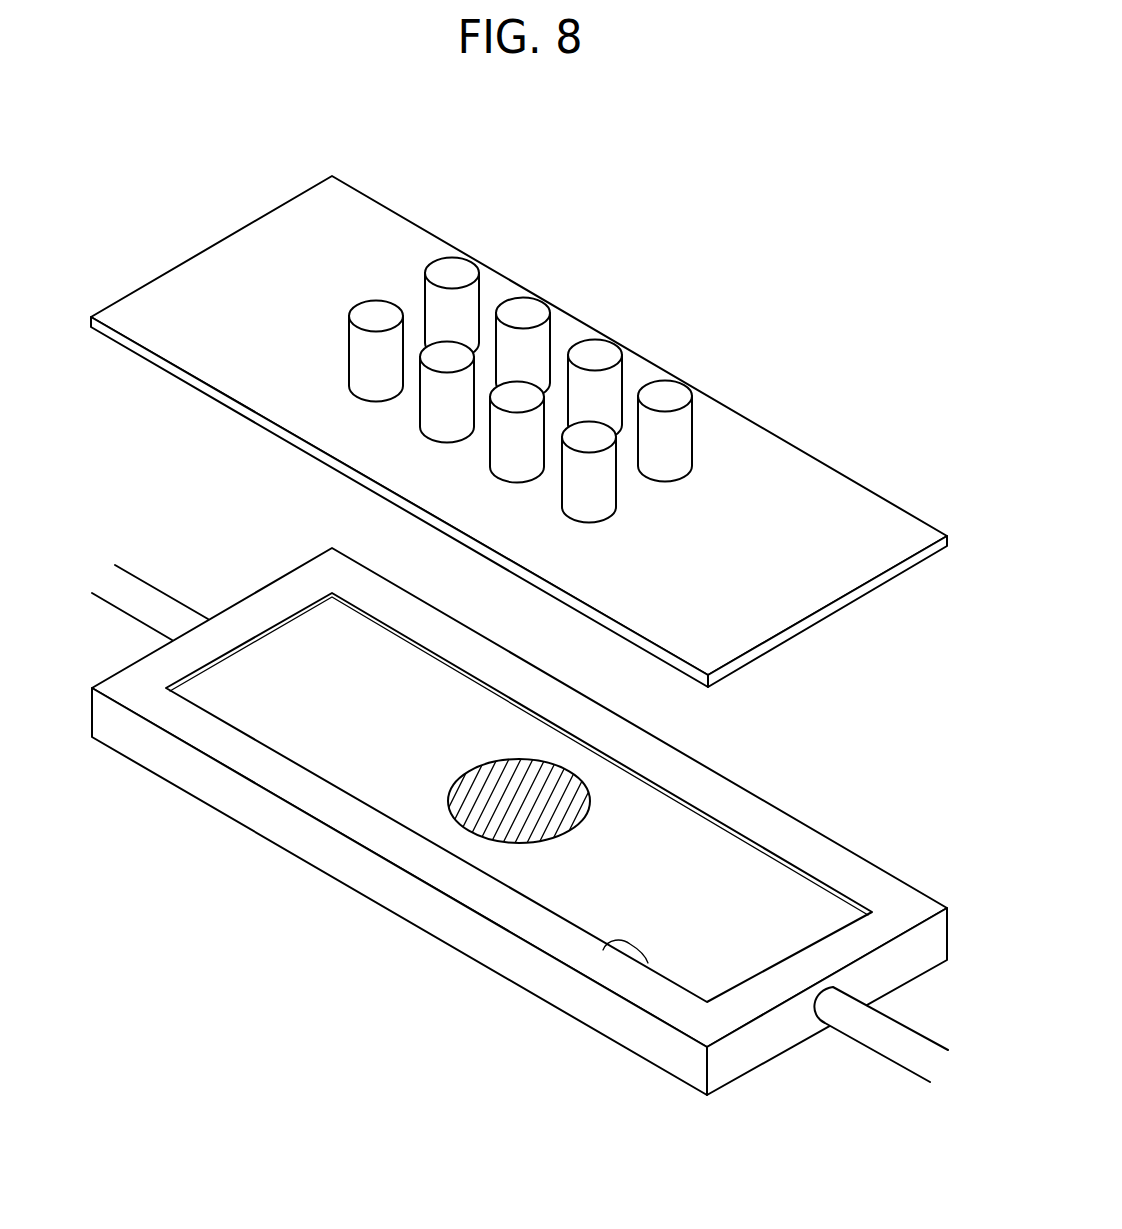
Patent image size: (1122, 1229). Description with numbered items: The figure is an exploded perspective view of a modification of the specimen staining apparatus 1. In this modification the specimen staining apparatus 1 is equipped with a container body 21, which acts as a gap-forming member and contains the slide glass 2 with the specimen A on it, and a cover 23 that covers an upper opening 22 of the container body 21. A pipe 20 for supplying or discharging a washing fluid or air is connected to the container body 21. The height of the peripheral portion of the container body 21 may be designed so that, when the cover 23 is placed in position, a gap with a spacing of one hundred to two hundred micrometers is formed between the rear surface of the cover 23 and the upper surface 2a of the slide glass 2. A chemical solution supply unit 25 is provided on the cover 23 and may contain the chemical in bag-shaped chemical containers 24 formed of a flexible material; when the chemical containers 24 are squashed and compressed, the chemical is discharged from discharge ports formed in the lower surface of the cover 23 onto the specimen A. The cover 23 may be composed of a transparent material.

The specimen staining apparatus 1 is at (80, 167).
The slide glass 2 is at (284, 640).
The upper surface of the slide glass 2a is at (762, 883).
The pipe 20 is at (885, 1045).
The container body 21 is at (402, 887).
The upper opening 22 is at (605, 953).
The cover 23 is at (841, 499).
The chemical containers 24 is at (675, 443).
The chemical solution supply unit 25 is at (647, 353).
The specimen A is at (483, 777).